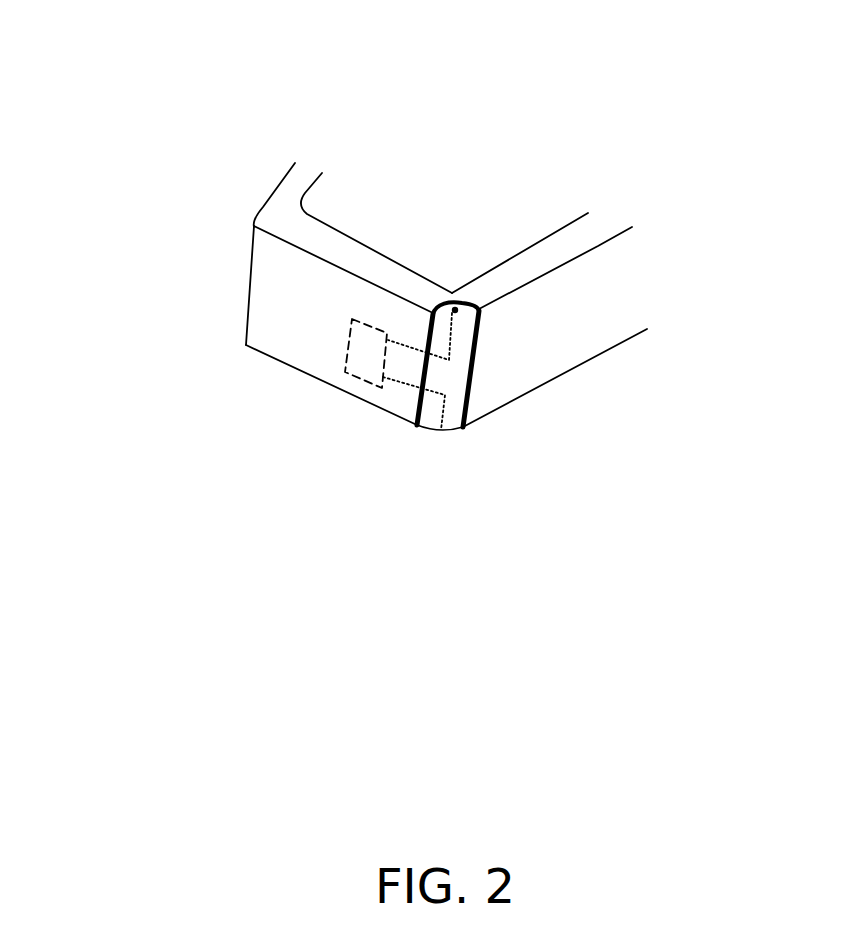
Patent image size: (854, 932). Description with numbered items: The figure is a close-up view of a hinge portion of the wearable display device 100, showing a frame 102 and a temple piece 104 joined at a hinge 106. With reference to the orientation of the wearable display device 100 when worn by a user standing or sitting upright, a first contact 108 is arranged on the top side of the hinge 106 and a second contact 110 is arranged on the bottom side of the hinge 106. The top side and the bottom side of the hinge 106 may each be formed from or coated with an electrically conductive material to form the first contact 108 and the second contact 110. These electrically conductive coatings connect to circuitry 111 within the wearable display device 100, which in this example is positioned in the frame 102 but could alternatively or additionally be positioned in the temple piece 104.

The wearable display device 100 is at (136, 122).
The frame 102 is at (249, 292).
The temple piece 104 is at (598, 246).
The hinge 106 is at (492, 368).
The first contact 108 is at (453, 309).
The second contact 110 is at (434, 444).
The circuitry 111 is at (346, 360).